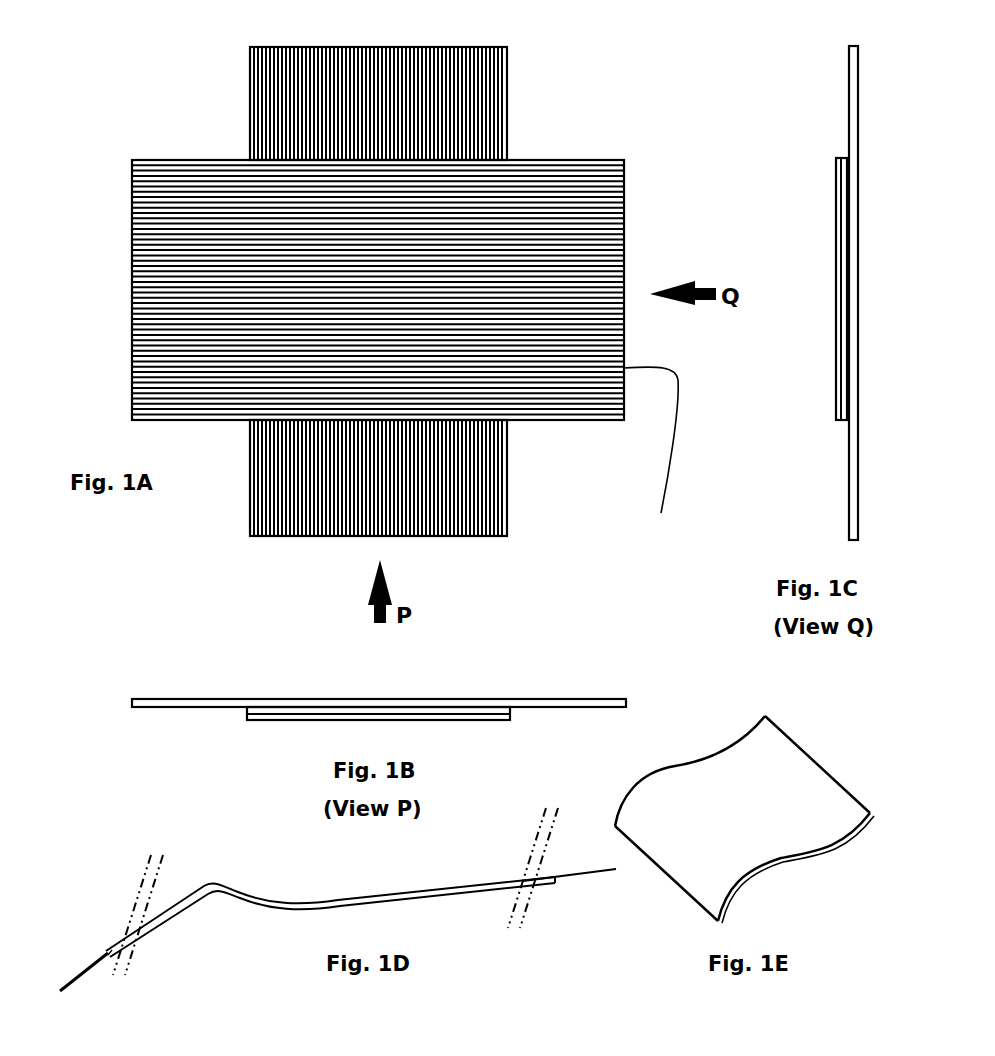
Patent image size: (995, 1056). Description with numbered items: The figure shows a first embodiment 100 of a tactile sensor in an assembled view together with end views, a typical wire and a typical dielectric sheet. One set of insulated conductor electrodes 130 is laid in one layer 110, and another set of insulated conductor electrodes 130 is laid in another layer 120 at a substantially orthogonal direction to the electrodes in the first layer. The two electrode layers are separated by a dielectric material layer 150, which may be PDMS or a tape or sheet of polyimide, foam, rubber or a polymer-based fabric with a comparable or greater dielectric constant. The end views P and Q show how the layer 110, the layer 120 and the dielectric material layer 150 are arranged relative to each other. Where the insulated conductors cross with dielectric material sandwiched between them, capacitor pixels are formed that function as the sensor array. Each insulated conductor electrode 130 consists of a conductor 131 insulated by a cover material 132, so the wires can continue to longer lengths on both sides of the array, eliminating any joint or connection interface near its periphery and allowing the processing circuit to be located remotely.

In FIG. 1A, the first embodiment 100 is at (178, 122).
In FIG. 1A, the layer 110 is at (505, 73).
In FIG. 1C, the layer 110 is at (840, 70).
In FIG. 1B, the layer 110 is at (250, 716).
In FIG. 1A, the layer 120 is at (604, 140).
In FIG. 1C, the layer 120 is at (828, 148).
In FIG. 1B, the layer 120 is at (204, 690).
In FIG. 1A, the insulated conductor electrode 130 is at (432, 530).
In FIG. 1D, the insulated conductor electrode 130 is at (200, 882).
In FIG. 1D, the conductor 131 is at (70, 958).
In FIG. 1D, the cover material 132 is at (99, 946).
In FIG. 1C, the dielectric material layer 150 is at (838, 412).
In FIG. 1B, the dielectric material layer 150 is at (502, 700).
In FIG. 1E, the dielectric material layer 150 is at (717, 772).